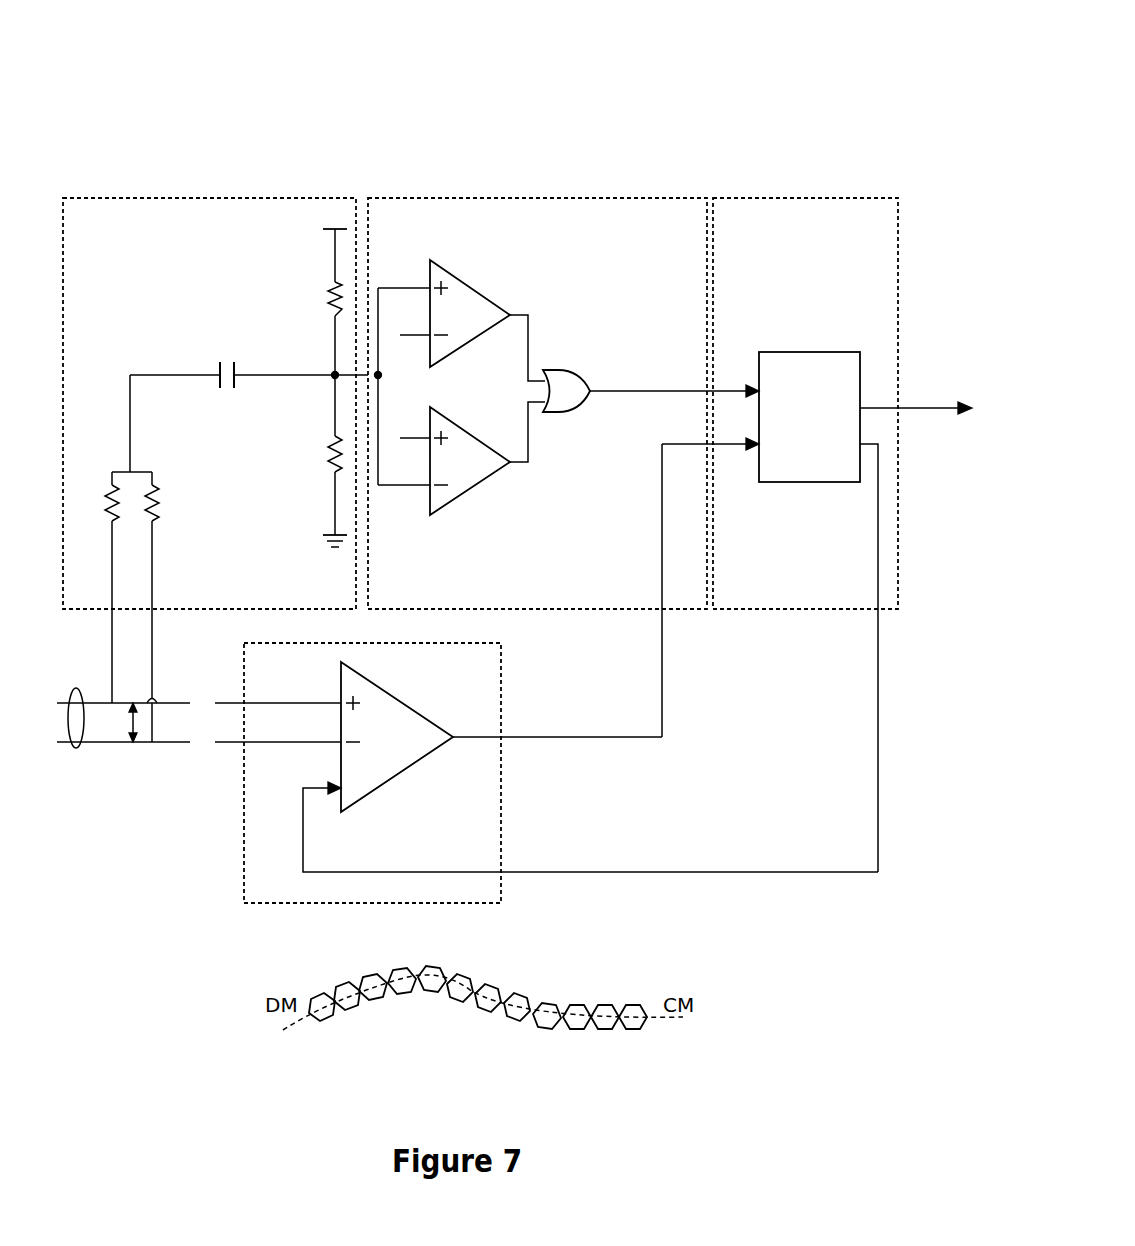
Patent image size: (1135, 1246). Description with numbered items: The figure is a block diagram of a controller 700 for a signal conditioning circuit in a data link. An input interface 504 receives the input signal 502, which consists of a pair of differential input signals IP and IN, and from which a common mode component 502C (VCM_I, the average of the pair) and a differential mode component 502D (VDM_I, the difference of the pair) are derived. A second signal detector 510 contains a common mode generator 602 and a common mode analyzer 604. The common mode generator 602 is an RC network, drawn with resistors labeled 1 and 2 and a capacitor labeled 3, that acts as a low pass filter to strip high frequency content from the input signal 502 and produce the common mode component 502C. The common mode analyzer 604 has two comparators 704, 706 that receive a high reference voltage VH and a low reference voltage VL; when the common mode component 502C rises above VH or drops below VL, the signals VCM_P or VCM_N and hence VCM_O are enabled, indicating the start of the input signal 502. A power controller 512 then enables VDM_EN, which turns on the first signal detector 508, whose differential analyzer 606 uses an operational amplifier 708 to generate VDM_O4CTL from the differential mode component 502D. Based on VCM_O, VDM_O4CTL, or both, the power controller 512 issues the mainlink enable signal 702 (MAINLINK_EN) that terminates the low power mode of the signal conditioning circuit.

The controller 700 is at (770, 50).
The second signal detector 510 is at (693, 165).
The power controller 512 is at (842, 197).
The common mode generator 602 is at (298, 198).
The common mode analyzer 604 is at (478, 197).
The differential analyzer 606 is at (501, 667).
The first signal detector 508 is at (414, 773).
The comparator 704 is at (465, 280).
The comparator 706 is at (465, 428).
The operational amplifier 708 is at (405, 708).
The mainlink enable signal 702 is at (907, 408).
The input signal 502 is at (76, 690).
The common mode component 502C is at (379, 362).
The differential mode component 502D is at (130, 722).
The input interface 504 is at (198, 798).
The first termination resistor 1 is at (102, 496).
The second termination resistor 2 is at (162, 496).
The coupling capacitor 3 is at (249, 387).